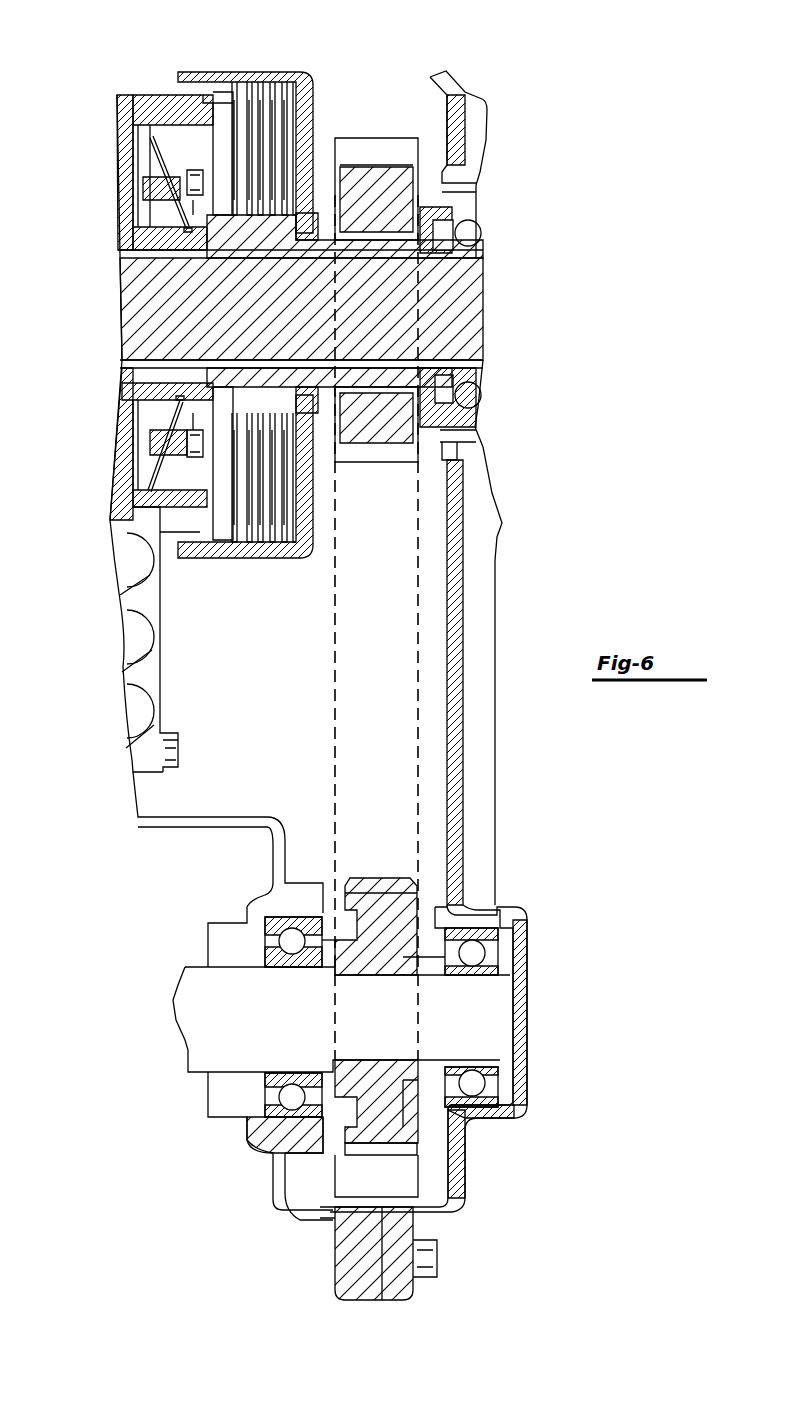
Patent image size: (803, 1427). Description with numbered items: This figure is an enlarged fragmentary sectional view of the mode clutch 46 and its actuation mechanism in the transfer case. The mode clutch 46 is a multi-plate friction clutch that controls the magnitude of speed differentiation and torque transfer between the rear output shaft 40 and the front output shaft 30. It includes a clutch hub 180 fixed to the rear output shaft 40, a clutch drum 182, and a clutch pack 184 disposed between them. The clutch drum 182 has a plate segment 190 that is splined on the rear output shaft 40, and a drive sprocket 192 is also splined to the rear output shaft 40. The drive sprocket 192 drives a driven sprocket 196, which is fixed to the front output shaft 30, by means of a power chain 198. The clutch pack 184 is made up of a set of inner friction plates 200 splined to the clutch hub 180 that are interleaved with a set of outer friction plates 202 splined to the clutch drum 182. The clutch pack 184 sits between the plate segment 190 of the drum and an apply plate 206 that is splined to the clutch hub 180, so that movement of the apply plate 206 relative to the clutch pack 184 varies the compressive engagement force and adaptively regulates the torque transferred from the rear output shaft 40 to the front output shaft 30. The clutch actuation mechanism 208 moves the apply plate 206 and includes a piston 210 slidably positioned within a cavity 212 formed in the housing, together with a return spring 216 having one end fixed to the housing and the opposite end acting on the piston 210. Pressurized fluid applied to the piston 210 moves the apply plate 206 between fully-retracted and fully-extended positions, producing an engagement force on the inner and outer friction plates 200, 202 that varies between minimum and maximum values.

The front output shaft 30 is at (190, 1042).
The rear output shaft 40 is at (468, 315).
The mode clutch 46 is at (262, 560).
The clutch hub 180 is at (227, 237).
The clutch drum 182 is at (258, 75).
The clutch pack 184 is at (283, 75).
The plate segment 190 is at (312, 180).
The drive sprocket 192 is at (372, 233).
The driven sprocket 196 is at (392, 900).
The power chain 198 is at (335, 697).
The inner friction plates 200 is at (262, 217).
The outer friction plates 202 is at (235, 92).
The apply plate 206 is at (223, 164).
The clutch actuation mechanism 208 is at (165, 510).
The piston 210 is at (132, 497).
The cavity 212 is at (133, 427).
The return spring 216 is at (157, 467).